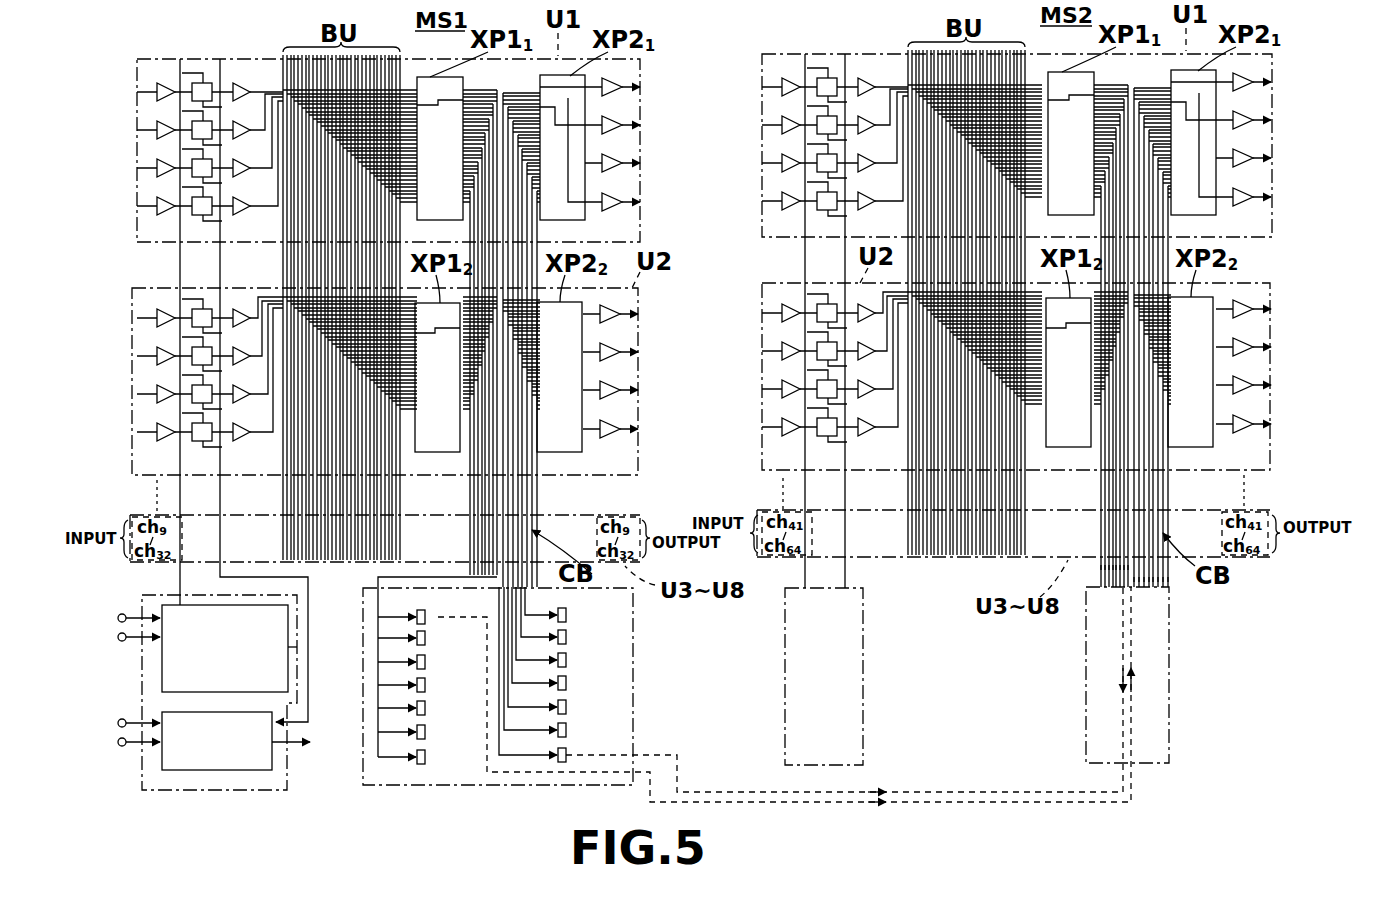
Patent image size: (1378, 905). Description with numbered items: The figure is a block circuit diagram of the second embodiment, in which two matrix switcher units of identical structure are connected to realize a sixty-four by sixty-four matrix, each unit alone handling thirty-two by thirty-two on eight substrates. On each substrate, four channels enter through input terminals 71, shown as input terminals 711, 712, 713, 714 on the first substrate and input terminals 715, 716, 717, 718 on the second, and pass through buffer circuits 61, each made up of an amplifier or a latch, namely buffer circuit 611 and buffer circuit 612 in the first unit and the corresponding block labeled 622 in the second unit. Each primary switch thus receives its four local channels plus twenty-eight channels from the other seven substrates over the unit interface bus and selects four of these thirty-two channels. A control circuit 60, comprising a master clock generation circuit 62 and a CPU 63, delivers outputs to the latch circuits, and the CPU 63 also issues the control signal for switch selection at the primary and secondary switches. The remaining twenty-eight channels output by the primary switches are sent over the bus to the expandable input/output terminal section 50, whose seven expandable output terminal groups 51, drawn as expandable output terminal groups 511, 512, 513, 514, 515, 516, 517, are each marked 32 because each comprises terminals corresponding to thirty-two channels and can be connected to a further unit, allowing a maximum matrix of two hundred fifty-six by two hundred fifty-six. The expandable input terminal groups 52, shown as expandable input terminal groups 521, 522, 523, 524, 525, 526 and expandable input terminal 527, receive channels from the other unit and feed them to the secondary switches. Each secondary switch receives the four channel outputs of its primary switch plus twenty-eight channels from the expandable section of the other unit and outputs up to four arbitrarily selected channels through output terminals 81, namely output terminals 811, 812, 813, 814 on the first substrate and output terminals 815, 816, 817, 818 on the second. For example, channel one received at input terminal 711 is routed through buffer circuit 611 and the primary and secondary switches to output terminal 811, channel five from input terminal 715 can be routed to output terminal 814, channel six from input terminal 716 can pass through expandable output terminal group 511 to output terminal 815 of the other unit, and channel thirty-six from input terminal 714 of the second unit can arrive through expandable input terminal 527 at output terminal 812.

The input terminals 71 is at (443, 249).
The input terminal 711 is at (137, 92).
The input terminal 712 is at (137, 130).
The input terminal 713 is at (137, 168).
The input terminal 714 is at (137, 206).
The input terminal 715 is at (132, 318).
The input terminal 716 is at (132, 356).
The input terminal 717 is at (132, 394).
The input terminal 718 is at (132, 432).
The output terminals 81 is at (952, 245).
The output terminal 811 is at (641, 86).
The output terminal 812 is at (641, 124).
The output terminal 813 is at (641, 162).
The output terminal 814 is at (641, 201).
The output terminal 815 is at (639, 313).
The output terminal 816 is at (639, 351).
The output terminal 817 is at (639, 389).
The output terminal 818 is at (639, 428).
The buffer circuits 61 is at (503, 233).
The buffer circuit 611 is at (212, 78).
The buffer circuit 612 is at (180, 290).
The input circuit 622 is at (818, 288).
The control circuit 60 is at (297, 618).
The master clock generation circuit 62 is at (297, 645).
The CPU 63 is at (270, 758).
The expandable input/output terminal section 50 is at (633, 628).
The expandable output terminal groups 51 is at (428, 679).
The expandable output terminal group 511 is at (426, 617).
The expandable output terminal group 512 is at (426, 638).
The expandable output terminal group 513 is at (426, 662).
The expandable output terminal group 514 is at (426, 685).
The expandable output terminal group 515 is at (426, 708).
The expandable output terminal group 516 is at (426, 732).
The expandable output terminal group 517 is at (426, 757).
The expandable input terminal groups 52 is at (560, 674).
The expandable input terminal group 521 is at (567, 615).
The expandable input terminal group 522 is at (567, 637).
The expandable input terminal group 523 is at (567, 660).
The expandable input terminal group 524 is at (567, 683).
The expandable input terminal group 525 is at (567, 707).
The expandable input terminal group 526 is at (567, 730).
The expandable input terminal 527 is at (567, 755).
The thirty-two channel terminal group 32 is at (437, 667).